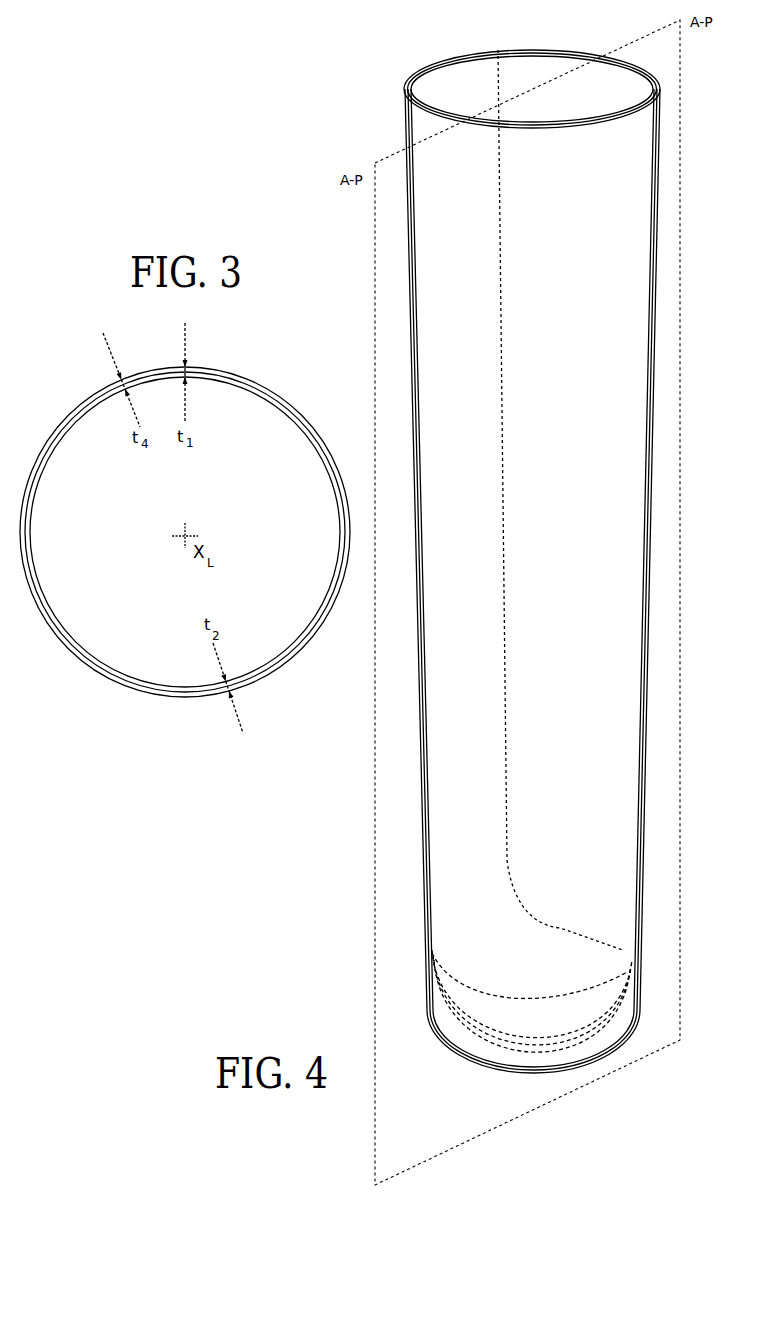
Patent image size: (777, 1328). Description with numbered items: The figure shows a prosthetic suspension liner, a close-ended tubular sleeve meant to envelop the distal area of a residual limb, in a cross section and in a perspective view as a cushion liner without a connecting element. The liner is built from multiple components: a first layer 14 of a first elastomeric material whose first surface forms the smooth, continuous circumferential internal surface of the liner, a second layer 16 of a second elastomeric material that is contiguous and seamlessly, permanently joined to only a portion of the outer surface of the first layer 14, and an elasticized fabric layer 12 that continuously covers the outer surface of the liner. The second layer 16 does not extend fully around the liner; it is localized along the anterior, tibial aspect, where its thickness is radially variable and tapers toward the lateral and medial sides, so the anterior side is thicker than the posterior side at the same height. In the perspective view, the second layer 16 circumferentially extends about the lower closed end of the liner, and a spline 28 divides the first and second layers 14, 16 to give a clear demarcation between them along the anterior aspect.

In FIG. 3, the fabric layer 12 is at (142, 692).
In FIG. 4, the fabric layer 12 is at (532, 561).
In FIG. 3, the first layer 14 is at (85, 663).
In FIG. 4, the first layer 14 is at (643, 680).
In FIG. 3, the second layer 16 is at (228, 370).
In FIG. 4, the second layer 16 is at (440, 796).
In FIG. 4, the spline 28 is at (502, 557).